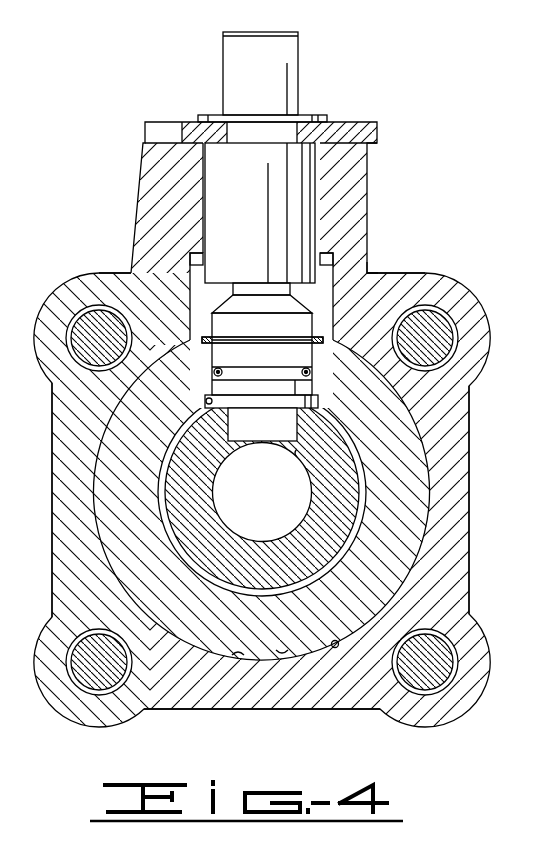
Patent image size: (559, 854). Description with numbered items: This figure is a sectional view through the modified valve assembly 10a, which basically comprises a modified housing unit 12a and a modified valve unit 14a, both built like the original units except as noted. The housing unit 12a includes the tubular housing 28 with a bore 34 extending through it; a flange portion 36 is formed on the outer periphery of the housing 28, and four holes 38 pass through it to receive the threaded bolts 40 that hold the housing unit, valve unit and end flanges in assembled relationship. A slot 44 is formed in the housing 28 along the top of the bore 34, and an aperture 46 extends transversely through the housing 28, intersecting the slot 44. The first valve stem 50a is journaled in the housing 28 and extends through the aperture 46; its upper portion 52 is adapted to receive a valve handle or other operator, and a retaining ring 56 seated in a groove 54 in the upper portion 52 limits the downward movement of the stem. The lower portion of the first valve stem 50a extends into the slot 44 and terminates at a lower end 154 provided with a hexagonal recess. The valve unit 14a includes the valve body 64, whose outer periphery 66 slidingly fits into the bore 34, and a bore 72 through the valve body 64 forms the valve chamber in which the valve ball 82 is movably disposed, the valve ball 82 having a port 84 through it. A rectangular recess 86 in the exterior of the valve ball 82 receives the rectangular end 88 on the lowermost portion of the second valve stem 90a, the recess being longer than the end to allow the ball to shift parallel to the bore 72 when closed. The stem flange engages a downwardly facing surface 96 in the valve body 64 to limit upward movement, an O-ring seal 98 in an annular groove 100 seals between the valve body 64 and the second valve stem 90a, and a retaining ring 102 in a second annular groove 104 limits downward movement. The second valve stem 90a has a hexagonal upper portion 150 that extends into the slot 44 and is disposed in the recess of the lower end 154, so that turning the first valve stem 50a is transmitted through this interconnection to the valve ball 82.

The modified valve assembly 10a is at (279, 427).
The modified housing unit 12a is at (372, 212).
The modified valve unit 14a is at (440, 477).
The tubular housing 28 is at (360, 266).
The bore 34 is at (284, 652).
The flange portion 36 is at (50, 365).
The holes 38 is at (102, 312).
The threaded bolts 40 is at (88, 320).
The slot 44 is at (198, 302).
The aperture 46 is at (207, 170).
The first valve stem 50a is at (226, 203).
The upper portion 52 is at (290, 53).
The groove 54 is at (235, 117).
The retaining ring 56 is at (212, 117).
The valve body 64 is at (236, 657).
The outer periphery 66 is at (332, 641).
The bore 72 is at (224, 573).
The valve ball 82 is at (198, 544).
The port 84 is at (277, 498).
The rectangular recess 86 is at (299, 453).
The rectangular end 88 is at (240, 428).
The second valve stem 90a is at (312, 388).
The downwardly facing surface 96 is at (206, 400).
The O-ring seal 98 is at (214, 373).
The annular groove 100 is at (296, 365).
The retaining ring 102 is at (223, 341).
The second annular groove 104 is at (270, 346).
The upper portion 150 is at (302, 304).
The lower end 154 is at (223, 284).